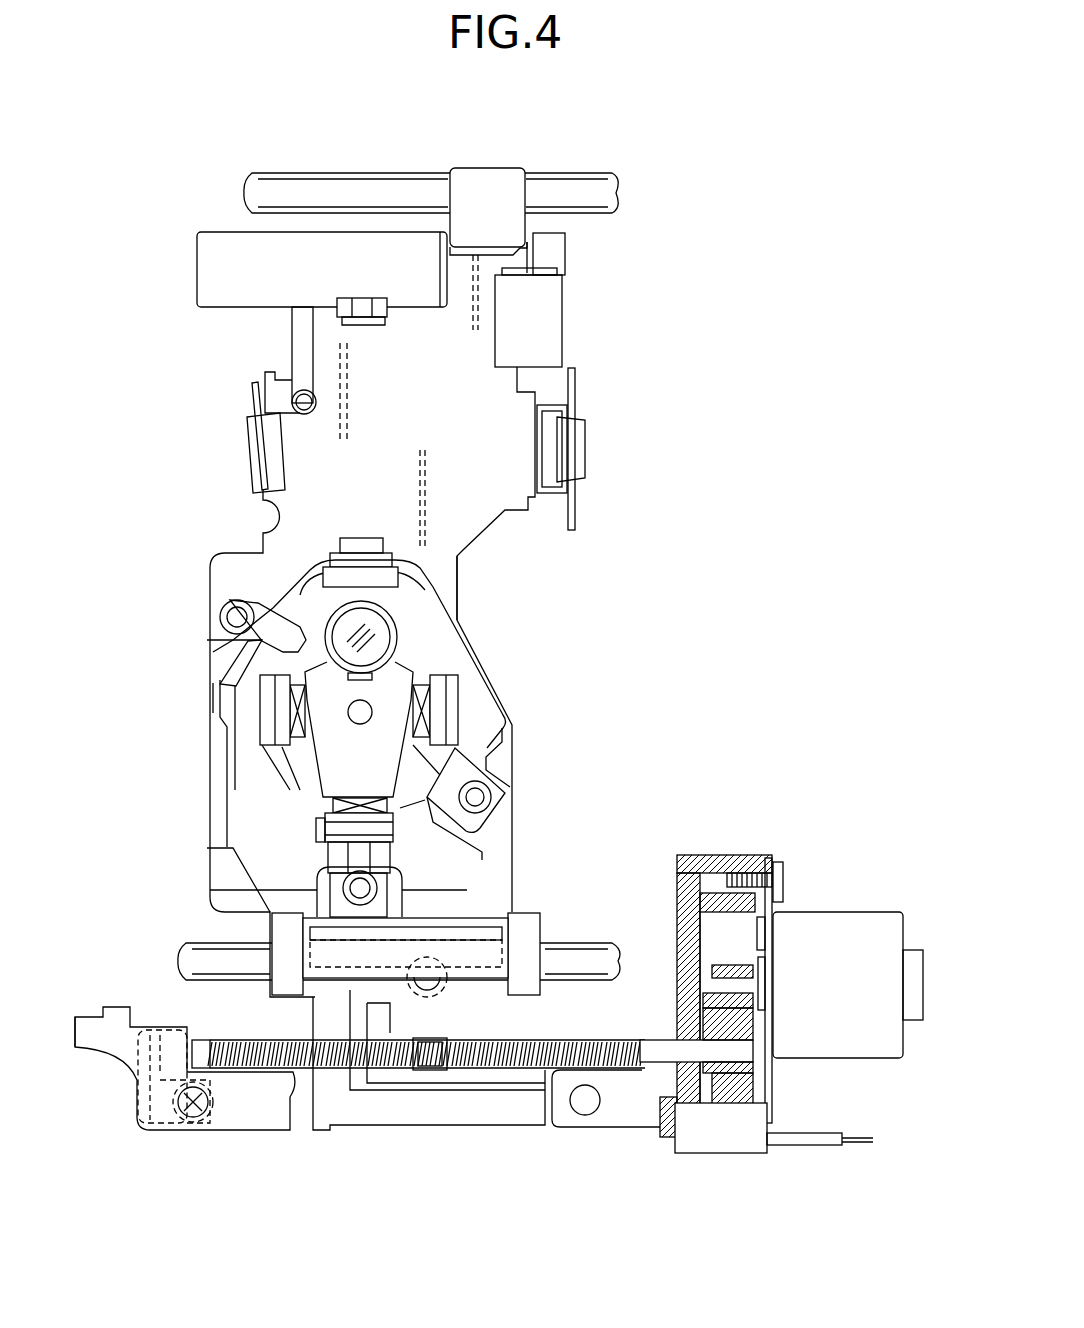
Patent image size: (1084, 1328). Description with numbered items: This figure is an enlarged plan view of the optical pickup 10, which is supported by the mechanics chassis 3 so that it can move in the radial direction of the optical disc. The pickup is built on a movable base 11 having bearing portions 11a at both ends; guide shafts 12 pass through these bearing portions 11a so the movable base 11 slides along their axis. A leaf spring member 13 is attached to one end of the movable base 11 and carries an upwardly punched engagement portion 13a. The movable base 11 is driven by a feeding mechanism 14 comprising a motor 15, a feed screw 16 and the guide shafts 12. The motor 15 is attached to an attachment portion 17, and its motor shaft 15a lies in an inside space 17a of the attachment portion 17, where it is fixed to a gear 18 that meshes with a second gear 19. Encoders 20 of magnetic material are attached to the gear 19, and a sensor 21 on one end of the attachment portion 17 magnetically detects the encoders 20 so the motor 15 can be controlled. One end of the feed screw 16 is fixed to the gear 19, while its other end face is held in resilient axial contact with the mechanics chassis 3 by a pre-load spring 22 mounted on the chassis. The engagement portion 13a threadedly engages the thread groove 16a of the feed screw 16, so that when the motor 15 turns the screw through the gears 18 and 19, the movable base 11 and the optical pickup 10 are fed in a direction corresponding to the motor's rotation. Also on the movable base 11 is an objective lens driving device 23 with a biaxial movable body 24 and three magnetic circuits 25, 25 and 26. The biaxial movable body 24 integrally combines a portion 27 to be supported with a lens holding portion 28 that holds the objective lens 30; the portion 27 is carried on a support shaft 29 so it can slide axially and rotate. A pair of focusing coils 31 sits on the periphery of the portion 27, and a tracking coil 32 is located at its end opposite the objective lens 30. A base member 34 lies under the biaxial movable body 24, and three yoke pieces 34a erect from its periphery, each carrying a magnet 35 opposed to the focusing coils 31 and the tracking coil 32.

The mechanics chassis 3 is at (248, 1120).
The optical pickup 10 is at (597, 150).
The movable base 11 is at (480, 520).
The bearing portions 11a is at (492, 187).
The guide shafts 12 is at (592, 207).
The leaf spring member 13 is at (480, 993).
The engagement portion 13a is at (420, 1070).
The feeding mechanism 14 is at (125, 952).
The motor 15 is at (833, 912).
The motor shaft 15a is at (727, 878).
The feed screw 16 is at (612, 1035).
The thread groove 16a is at (620, 1070).
The attachment portion 17 is at (736, 853).
The inside space 17a is at (745, 917).
The gear 18 is at (720, 967).
The gear 19 is at (735, 1080).
The encoders 20 is at (703, 1005).
The sensor 21 is at (745, 1145).
The pre-load spring 22 is at (160, 1072).
The objective lens driving device 23 is at (535, 605).
The biaxial movable body 24 is at (397, 630).
The magnetic circuits 25 is at (260, 680).
The magnetic circuit 26 is at (360, 818).
The portion to be supported 27 is at (300, 783).
The lens holding portion 28 is at (393, 620).
The support shaft 29 is at (300, 668).
The objective lens 30 is at (343, 630).
The focusing coils 31 is at (275, 700).
The tracking coil 32 is at (347, 812).
The base member 34 is at (487, 785).
The yoke pieces 34a is at (262, 740).
The magnets 35 is at (268, 748).